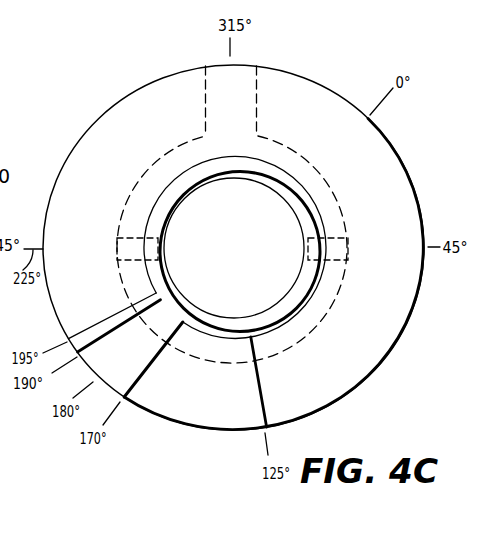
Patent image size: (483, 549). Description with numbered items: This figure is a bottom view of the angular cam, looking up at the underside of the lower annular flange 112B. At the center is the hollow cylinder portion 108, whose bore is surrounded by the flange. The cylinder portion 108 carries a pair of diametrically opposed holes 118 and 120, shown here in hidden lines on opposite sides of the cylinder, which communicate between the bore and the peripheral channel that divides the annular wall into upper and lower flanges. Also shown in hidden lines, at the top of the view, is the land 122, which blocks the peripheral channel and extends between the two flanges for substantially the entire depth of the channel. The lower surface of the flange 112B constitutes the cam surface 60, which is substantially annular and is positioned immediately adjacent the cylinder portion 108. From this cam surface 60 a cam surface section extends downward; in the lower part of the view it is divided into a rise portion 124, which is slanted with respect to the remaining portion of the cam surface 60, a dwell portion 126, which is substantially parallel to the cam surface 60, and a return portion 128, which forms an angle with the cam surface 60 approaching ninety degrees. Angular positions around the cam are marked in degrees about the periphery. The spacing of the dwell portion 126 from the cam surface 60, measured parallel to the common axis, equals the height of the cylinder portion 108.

The cam surface 60 is at (350, 358).
The hollow cylinder portion 108 is at (286, 188).
The lower annular flange 112B is at (397, 340).
The hole 118 is at (143, 258).
The hole 120 is at (317, 250).
The land 122 is at (236, 110).
The rise portion 124 is at (222, 410).
The dwell portion 126 is at (127, 357).
The return portion 128 is at (110, 323).